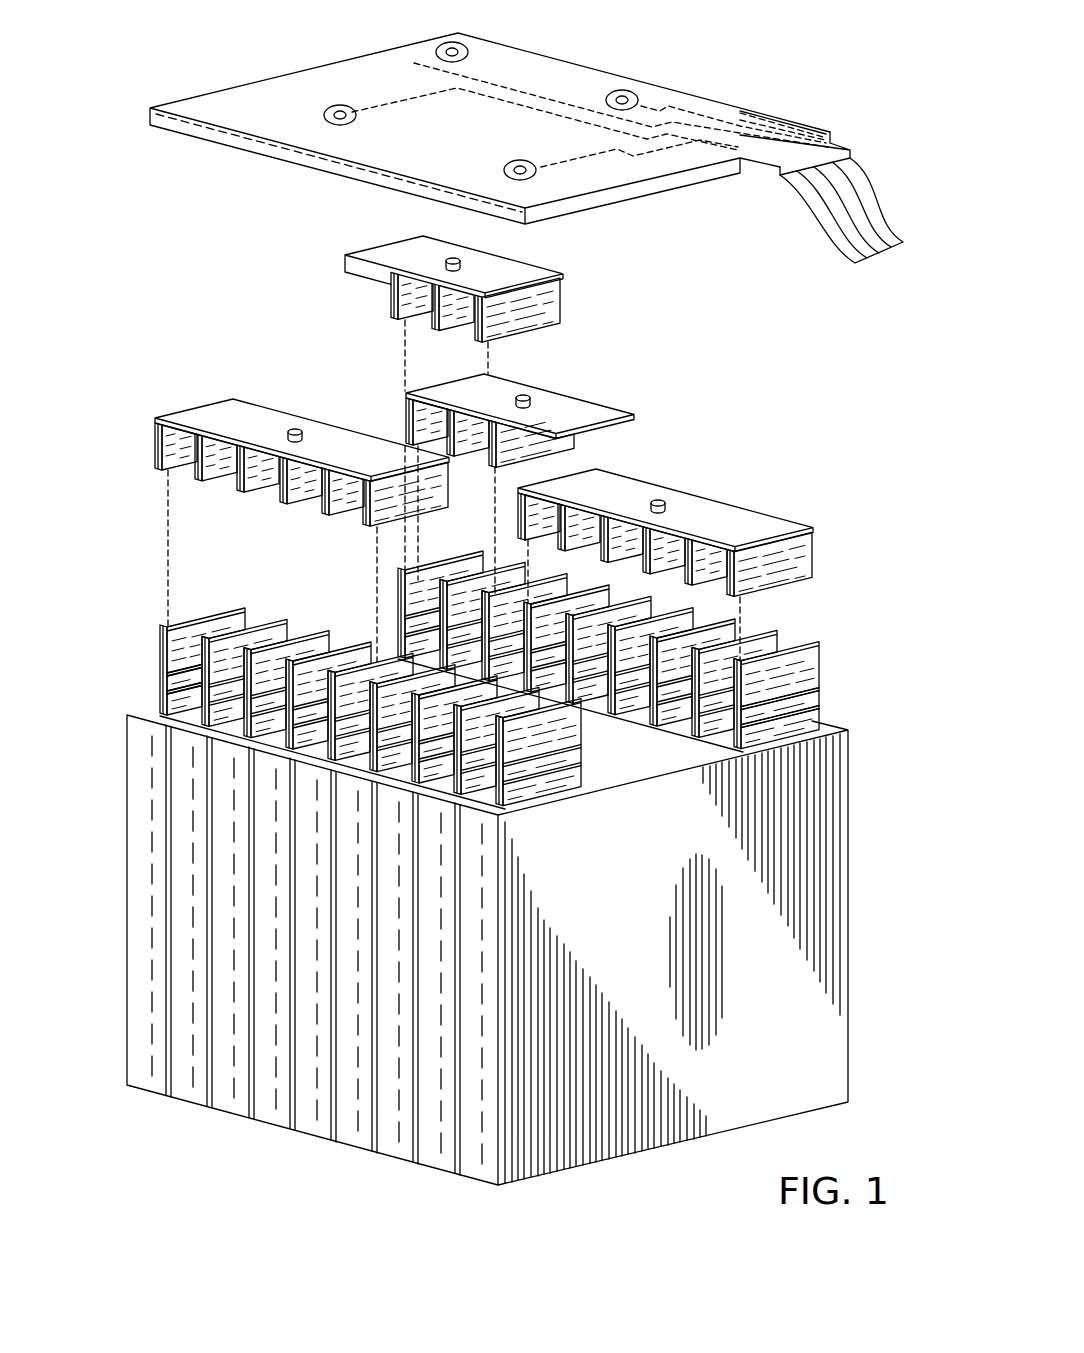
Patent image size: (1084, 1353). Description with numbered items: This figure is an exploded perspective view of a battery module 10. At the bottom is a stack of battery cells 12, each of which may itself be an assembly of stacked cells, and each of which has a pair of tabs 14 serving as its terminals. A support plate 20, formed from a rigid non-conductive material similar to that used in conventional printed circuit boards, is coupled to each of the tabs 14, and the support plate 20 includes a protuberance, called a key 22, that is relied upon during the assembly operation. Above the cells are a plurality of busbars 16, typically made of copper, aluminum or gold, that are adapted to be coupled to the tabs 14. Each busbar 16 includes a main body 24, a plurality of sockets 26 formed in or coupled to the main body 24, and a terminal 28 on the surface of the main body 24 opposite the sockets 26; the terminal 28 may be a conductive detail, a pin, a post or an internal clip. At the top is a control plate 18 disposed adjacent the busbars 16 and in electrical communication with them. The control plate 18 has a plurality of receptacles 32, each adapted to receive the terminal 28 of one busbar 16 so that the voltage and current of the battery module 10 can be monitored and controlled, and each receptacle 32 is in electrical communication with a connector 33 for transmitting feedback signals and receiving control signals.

The battery module 10 is at (142, 75).
The battery cells 12 is at (132, 862).
The tabs 14 is at (481, 673).
The busbars 16 is at (513, 403).
The control plate 18 is at (812, 125).
The support plate 20 is at (161, 658).
The key 22 is at (161, 691).
The main body 24 is at (398, 252).
The sockets 26 is at (240, 493).
The terminal 28 is at (453, 258).
The receptacles 32 is at (452, 45).
The connector 33 is at (867, 182).